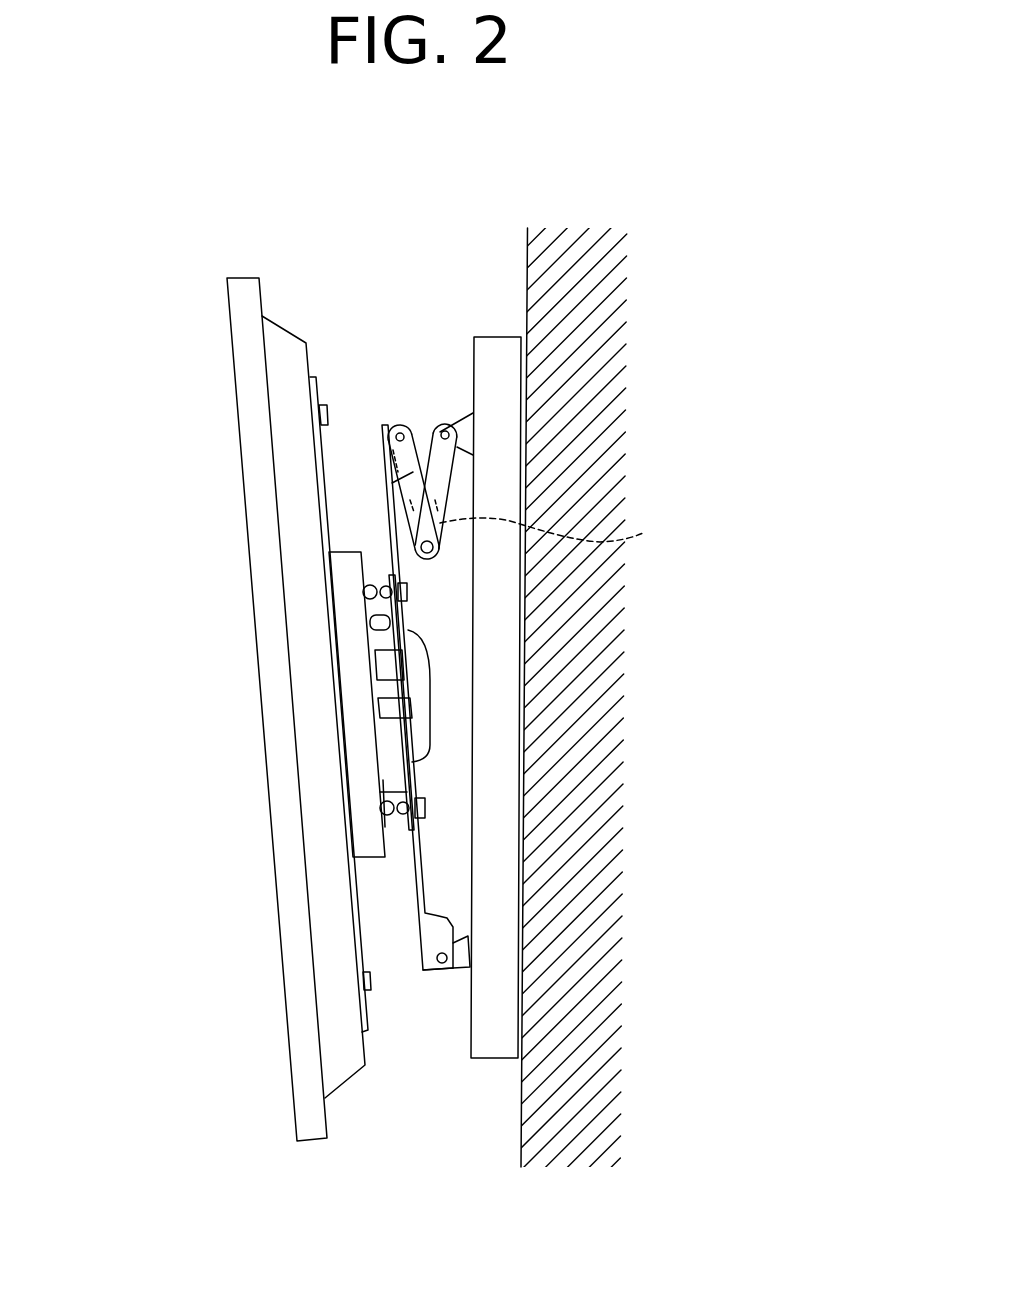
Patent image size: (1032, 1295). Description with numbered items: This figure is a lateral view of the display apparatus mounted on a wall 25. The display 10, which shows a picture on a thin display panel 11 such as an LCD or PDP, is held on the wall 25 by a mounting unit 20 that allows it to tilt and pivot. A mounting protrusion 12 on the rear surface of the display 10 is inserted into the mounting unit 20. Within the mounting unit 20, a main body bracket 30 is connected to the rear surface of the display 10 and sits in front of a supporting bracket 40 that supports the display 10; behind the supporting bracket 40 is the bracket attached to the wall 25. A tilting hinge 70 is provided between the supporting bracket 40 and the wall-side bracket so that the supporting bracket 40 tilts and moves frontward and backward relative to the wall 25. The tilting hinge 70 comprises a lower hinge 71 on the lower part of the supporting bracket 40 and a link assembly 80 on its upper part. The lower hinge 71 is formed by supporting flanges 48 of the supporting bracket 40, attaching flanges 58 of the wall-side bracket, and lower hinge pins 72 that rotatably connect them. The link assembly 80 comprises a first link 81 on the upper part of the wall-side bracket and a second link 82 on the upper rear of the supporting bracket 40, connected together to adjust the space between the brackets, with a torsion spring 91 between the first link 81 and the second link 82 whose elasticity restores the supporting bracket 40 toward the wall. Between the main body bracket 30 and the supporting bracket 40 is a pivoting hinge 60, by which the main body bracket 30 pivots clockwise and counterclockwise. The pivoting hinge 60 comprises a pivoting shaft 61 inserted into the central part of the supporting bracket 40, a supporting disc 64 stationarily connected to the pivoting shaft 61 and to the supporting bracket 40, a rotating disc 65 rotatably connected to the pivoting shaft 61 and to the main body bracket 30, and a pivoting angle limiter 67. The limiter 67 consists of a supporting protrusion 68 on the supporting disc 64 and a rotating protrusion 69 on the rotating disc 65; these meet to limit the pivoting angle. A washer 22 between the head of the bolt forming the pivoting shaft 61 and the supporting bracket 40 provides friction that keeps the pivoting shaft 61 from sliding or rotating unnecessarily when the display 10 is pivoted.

The display 10 is at (216, 276).
The display panel 11 is at (248, 570).
The mounting protrusion 12 is at (327, 412).
The mounting unit 20 is at (806, 930).
The washer 22 is at (397, 744).
The wall 25 is at (527, 247).
The main body bracket 30 is at (366, 930).
The supporting bracket 40 is at (438, 855).
The supporting flanges 48 is at (436, 968).
The attaching flanges 58 is at (466, 968).
The pivoting hinge 60 is at (415, 729).
The pivoting shaft 61 is at (388, 725).
The supporting disc 64 is at (387, 797).
The rotating disc 65 is at (385, 773).
The pivoting angle limiter 67 is at (253, 665).
The supporting protrusion 68 is at (380, 680).
The rotating protrusion 69 is at (388, 620).
The tilting hinge 70 is at (592, 491).
The lower hinge 71 is at (559, 868).
The lower hinge pins 72 is at (442, 966).
The link assembly 80 is at (566, 486).
The first link 81 is at (450, 470).
The second link 82 is at (415, 489).
The torsion spring 91 is at (565, 529).